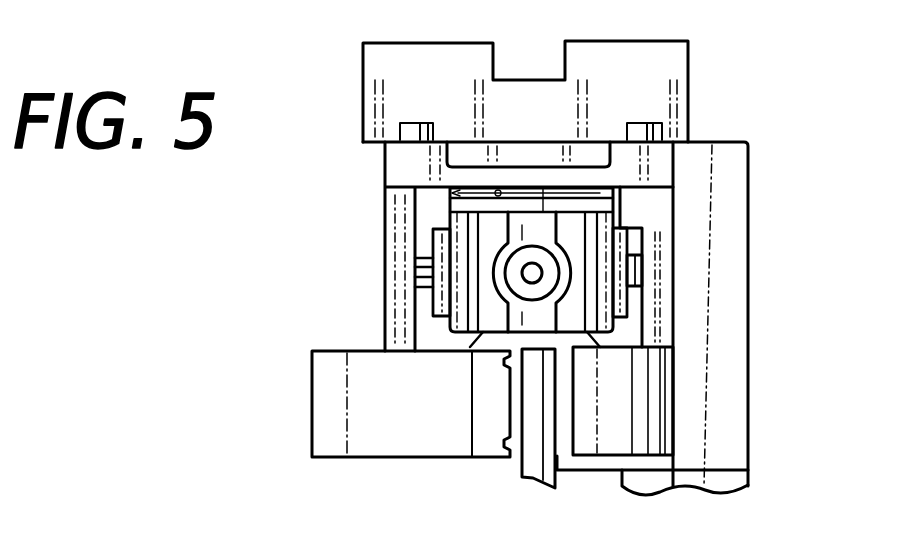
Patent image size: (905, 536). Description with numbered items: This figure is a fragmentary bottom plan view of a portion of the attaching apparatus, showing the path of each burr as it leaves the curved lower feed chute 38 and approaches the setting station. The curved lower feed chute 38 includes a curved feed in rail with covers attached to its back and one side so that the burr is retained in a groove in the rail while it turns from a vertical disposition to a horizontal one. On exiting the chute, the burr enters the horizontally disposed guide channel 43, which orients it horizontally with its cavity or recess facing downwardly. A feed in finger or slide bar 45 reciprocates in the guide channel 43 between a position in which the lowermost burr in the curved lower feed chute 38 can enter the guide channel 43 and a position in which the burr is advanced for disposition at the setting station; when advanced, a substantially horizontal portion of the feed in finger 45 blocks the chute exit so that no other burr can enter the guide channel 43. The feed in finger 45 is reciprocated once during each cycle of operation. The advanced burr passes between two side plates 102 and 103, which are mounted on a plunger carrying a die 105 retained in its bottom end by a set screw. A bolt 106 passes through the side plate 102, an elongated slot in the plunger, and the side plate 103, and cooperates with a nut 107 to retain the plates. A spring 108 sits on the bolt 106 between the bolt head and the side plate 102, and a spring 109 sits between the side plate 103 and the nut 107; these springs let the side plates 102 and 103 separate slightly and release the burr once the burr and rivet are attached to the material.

The curved lower feed chute 38 is at (407, 466).
The guide channel 43 is at (568, 402).
The feed in finger 45 is at (748, 470).
The side plate 102 is at (483, 336).
The side plate 103 is at (588, 334).
The die 105 is at (515, 287).
The bolt 106 is at (425, 280).
The nut 107 is at (642, 277).
The spring 108 is at (433, 243).
The spring 109 is at (627, 242).